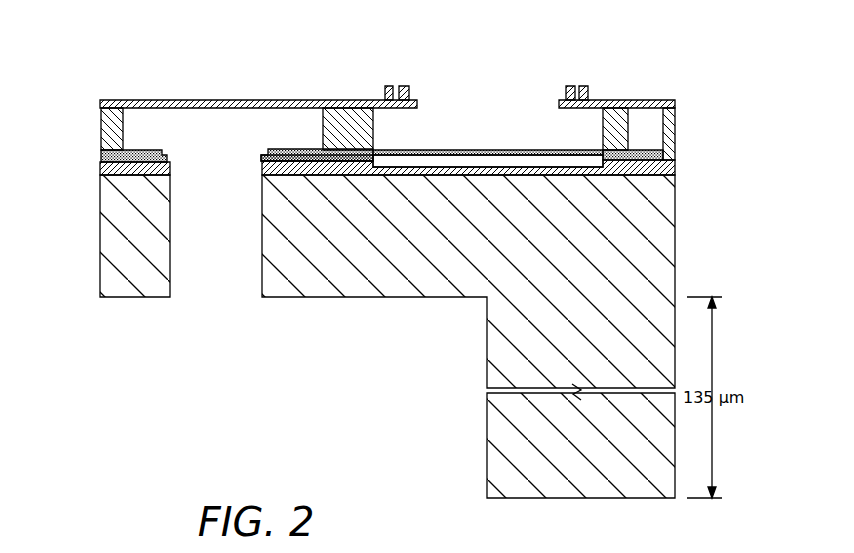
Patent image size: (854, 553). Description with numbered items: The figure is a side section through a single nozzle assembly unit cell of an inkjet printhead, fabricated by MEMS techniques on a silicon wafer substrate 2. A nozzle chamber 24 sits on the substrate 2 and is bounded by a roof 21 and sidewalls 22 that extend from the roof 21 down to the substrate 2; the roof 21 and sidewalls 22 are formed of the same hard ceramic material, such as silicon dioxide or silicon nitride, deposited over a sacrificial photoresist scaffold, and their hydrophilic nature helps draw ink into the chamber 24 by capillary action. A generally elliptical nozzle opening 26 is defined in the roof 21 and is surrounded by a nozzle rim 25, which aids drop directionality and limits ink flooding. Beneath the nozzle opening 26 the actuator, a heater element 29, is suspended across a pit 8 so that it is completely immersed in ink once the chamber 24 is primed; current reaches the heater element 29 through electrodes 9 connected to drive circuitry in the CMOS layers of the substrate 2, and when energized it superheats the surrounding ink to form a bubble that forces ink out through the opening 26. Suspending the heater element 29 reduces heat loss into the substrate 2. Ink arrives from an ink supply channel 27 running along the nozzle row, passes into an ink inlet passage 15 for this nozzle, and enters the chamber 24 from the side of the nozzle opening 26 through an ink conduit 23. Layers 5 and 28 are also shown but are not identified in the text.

The silicon wafer substrate 2 is at (670, 240).
The dielectric layer 5 is at (673, 170).
The pit 8 is at (558, 162).
The electrodes 9 is at (318, 150).
The ink inlet passage 15 is at (219, 279).
The roof 21 is at (388, 99).
The sidewalls 22 is at (101, 124).
The ink conduit 23 is at (223, 127).
The nozzle chamber 24 is at (488, 135).
The nozzle rim 25 is at (585, 86).
The nozzle opening 26 is at (511, 79).
The ink supply channel 27 is at (304, 370).
The heater layer 28 is at (637, 150).
The heater element 29 is at (420, 150).